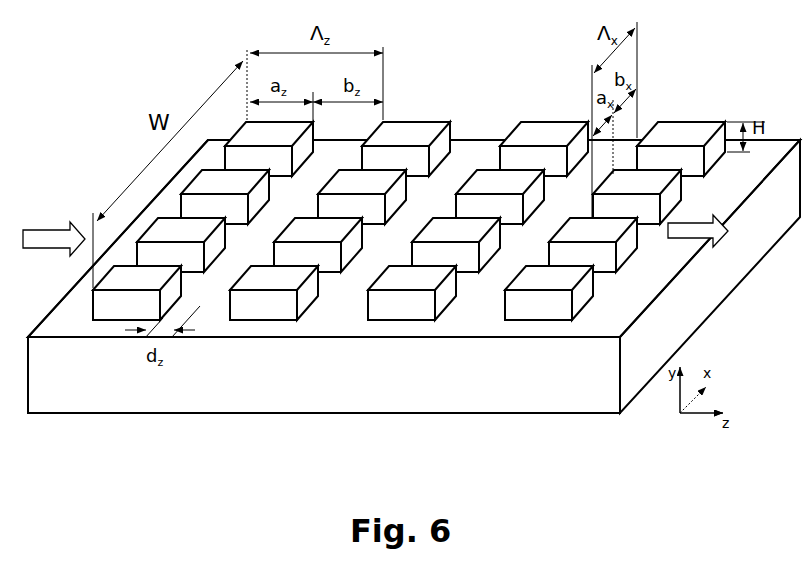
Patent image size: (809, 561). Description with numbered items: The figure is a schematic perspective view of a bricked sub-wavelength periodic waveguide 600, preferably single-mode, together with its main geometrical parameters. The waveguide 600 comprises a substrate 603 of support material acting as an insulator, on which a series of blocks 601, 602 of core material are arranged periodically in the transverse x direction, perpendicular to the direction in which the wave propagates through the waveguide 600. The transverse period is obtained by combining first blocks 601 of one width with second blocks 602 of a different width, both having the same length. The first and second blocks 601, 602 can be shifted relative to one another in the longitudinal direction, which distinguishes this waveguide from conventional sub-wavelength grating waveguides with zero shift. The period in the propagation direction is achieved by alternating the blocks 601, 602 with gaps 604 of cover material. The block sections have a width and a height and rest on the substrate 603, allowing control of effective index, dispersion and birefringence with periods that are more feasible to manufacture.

The bricked sub-wavelength periodic waveguide 600 is at (109, 128).
The first blocks 601 is at (409, 171).
The second blocks 602 is at (408, 157).
The substrate 603 is at (527, 385).
The gaps 604 is at (483, 150).